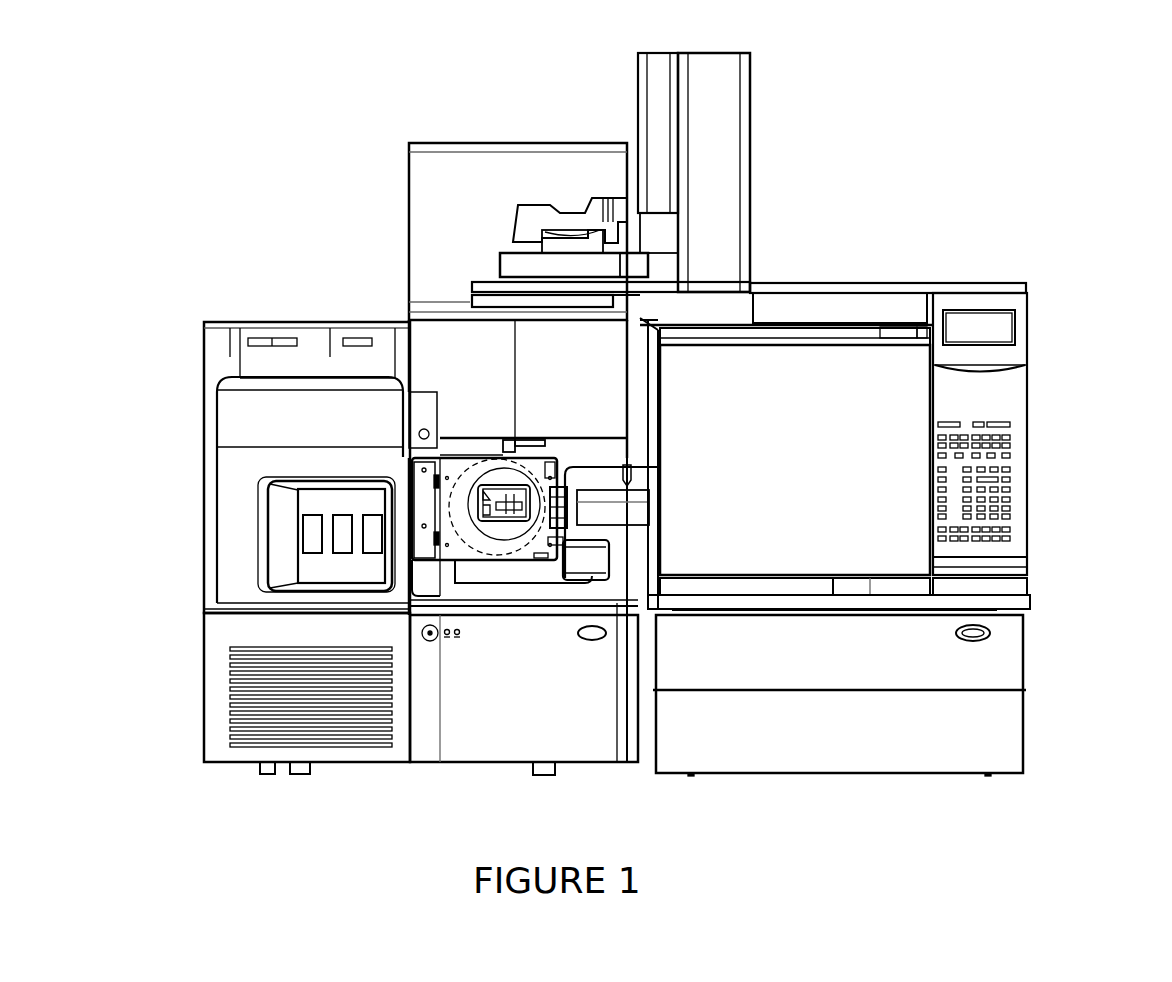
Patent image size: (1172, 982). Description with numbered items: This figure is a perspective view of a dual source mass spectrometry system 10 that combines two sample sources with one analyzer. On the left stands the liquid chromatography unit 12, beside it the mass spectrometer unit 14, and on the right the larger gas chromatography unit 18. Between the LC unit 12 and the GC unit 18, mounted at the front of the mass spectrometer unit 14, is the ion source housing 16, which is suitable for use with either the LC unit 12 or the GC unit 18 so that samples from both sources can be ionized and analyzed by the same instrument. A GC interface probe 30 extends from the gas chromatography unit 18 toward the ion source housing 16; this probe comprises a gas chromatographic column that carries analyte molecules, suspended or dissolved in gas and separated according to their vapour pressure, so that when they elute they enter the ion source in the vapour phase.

The dual source mass spectrometry system 10 is at (832, 207).
The liquid chromatography unit 12 is at (242, 419).
The mass spectrometer unit 14 is at (434, 352).
The ion source housing 16 is at (474, 548).
The gas chromatography unit 18 is at (890, 414).
The GC interface probe 30 is at (614, 508).